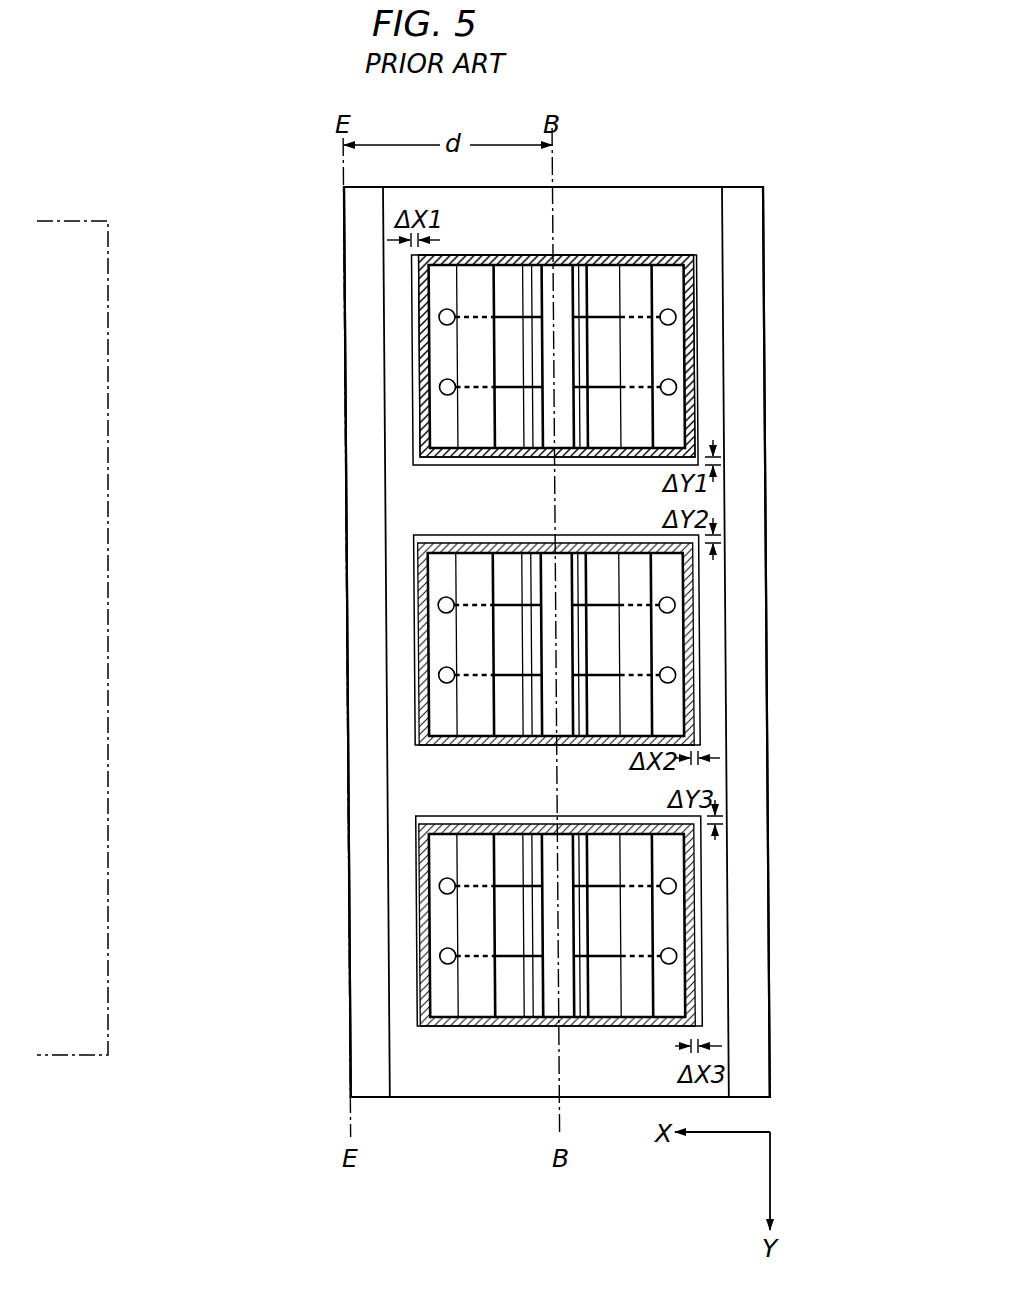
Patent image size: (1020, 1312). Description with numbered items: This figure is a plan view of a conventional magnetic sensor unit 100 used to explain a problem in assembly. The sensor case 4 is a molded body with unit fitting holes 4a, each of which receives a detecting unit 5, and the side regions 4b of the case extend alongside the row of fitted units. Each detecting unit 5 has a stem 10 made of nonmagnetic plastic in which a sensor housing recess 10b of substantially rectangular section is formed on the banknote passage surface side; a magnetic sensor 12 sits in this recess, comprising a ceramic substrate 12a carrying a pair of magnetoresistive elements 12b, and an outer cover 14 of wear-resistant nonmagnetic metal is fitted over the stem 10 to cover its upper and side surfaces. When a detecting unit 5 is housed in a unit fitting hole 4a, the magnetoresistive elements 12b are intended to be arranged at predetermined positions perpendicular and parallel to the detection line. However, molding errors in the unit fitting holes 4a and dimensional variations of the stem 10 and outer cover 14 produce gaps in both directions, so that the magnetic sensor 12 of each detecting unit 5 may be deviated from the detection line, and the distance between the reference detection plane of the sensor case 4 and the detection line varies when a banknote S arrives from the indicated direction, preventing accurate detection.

The printed circuit board assembly 100 is at (298, 243).
The sensor case 4 is at (355, 1053).
The unit fitting hole 4a is at (413, 298).
The board side strip 4b is at (372, 920).
The detecting unit 5 is at (701, 341).
The stem 10 is at (440, 417).
The sensor housing recess 10b is at (512, 432).
The magnetic sensor 12 is at (559, 572).
The ceramic substrate 12a is at (588, 292).
The magnetoresistive element 12b is at (535, 300).
The outer cover 14 is at (697, 290).
The banknote S is at (95, 427).